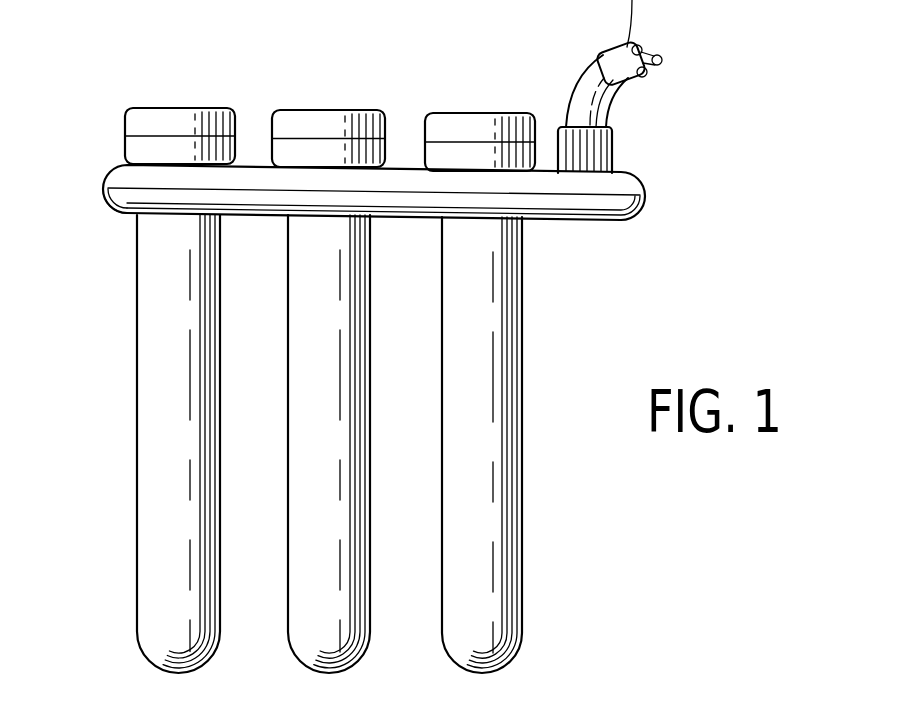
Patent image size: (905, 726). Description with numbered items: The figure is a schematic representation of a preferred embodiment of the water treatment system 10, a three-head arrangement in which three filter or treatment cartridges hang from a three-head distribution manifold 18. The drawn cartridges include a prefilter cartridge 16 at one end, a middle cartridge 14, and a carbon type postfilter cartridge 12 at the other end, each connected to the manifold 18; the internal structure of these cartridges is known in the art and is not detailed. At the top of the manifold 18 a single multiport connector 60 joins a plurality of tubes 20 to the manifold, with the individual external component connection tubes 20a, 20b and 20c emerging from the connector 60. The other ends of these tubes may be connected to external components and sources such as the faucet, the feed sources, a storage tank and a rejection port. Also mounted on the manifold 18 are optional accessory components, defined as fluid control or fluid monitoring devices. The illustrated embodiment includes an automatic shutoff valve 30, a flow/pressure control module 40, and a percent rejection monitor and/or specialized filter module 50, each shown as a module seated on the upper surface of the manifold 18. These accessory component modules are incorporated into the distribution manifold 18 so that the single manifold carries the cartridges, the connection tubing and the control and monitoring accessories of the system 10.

The water treatment system 10 is at (655, 177).
The carbon type postfilter cartridge 12 is at (511, 337).
The tube 14 is at (340, 390).
The prefilter cartridge 16 is at (185, 470).
The three-head distribution manifold 18 is at (108, 212).
The tubes 20 is at (665, 57).
The external component connection tube 20a is at (647, 84).
The external component connection tube 20b is at (663, 66).
The external component connection tube 20c is at (622, 50).
The automatic shutoff valve 30 is at (161, 121).
The flow/pressure control module 40 is at (320, 123).
The percent rejection monitor and/or specialized filter module 50 is at (470, 126).
The multiport connector 60 is at (560, 97).